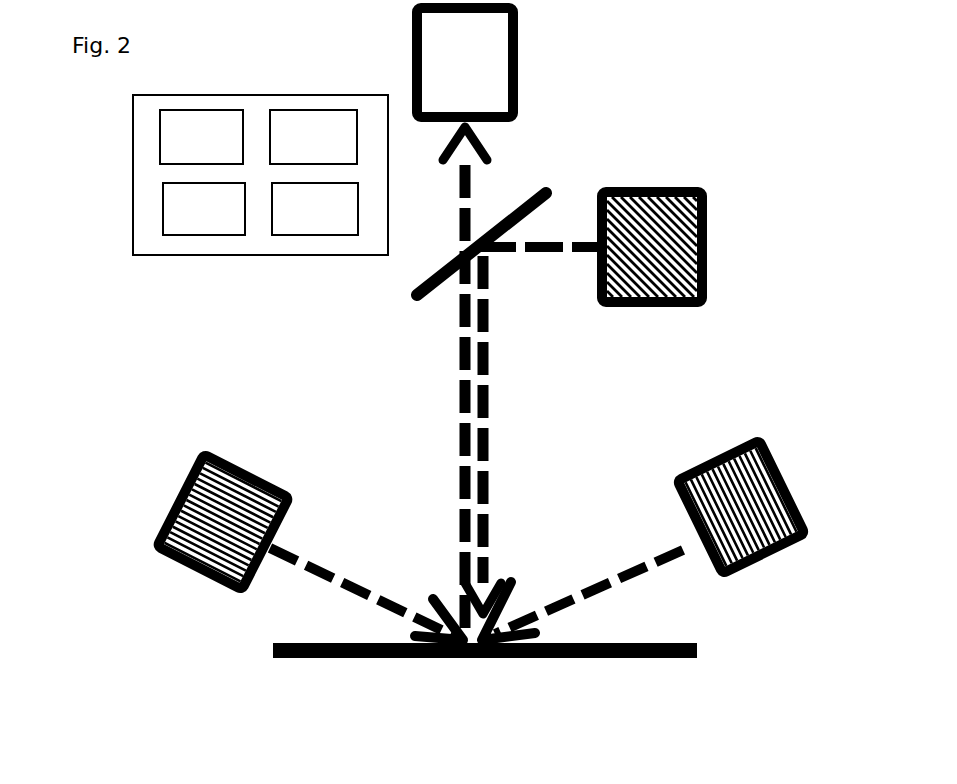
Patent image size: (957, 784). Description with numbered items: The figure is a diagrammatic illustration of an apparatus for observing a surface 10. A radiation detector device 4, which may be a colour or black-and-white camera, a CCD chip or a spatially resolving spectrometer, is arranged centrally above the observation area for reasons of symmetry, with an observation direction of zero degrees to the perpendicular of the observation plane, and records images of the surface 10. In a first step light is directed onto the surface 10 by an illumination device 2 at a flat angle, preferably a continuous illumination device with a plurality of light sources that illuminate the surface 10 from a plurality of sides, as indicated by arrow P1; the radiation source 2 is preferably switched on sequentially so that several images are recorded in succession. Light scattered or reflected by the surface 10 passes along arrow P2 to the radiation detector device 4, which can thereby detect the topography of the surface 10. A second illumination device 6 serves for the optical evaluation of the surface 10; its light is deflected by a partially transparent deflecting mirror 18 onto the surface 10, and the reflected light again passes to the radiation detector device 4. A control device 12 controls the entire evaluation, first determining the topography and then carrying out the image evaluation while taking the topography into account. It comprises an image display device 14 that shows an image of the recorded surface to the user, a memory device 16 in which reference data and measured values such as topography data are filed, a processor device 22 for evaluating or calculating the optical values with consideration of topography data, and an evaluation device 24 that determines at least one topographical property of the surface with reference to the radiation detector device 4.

The illumination device 2 is at (178, 493).
The radiation detector device 4 is at (473, 53).
The second illumination device 6 is at (707, 268).
The surface 10 is at (495, 657).
The control device 12 is at (206, 175).
The image display device 14 is at (201, 137).
The memory device 16 is at (313, 137).
The partially transparent deflecting mirror 18 is at (547, 197).
The processor device 22 is at (204, 209).
The evaluation device 24 is at (315, 209).
The arrow P1 is at (327, 562).
The arrow P2 is at (462, 486).